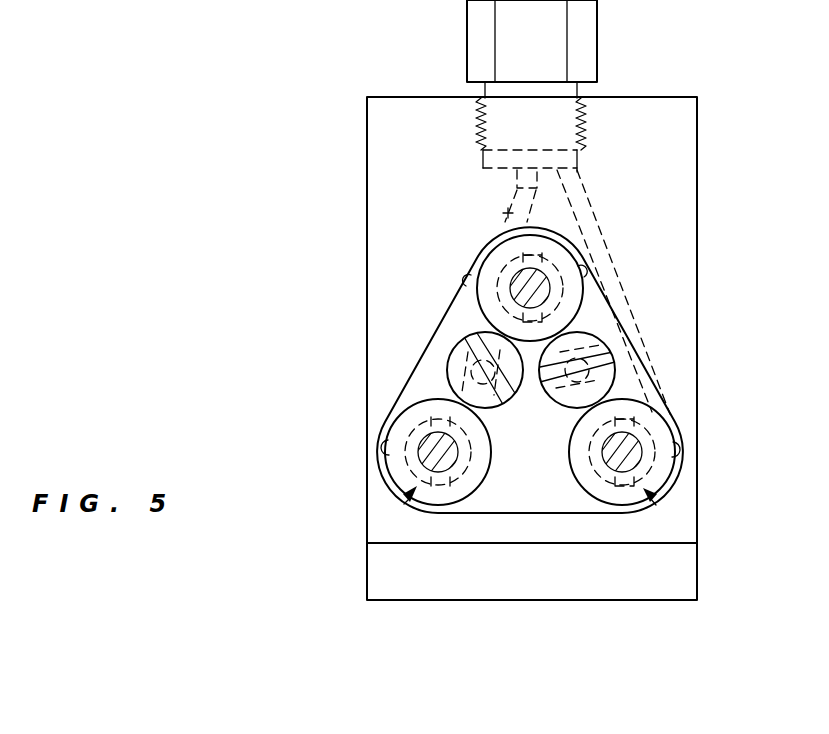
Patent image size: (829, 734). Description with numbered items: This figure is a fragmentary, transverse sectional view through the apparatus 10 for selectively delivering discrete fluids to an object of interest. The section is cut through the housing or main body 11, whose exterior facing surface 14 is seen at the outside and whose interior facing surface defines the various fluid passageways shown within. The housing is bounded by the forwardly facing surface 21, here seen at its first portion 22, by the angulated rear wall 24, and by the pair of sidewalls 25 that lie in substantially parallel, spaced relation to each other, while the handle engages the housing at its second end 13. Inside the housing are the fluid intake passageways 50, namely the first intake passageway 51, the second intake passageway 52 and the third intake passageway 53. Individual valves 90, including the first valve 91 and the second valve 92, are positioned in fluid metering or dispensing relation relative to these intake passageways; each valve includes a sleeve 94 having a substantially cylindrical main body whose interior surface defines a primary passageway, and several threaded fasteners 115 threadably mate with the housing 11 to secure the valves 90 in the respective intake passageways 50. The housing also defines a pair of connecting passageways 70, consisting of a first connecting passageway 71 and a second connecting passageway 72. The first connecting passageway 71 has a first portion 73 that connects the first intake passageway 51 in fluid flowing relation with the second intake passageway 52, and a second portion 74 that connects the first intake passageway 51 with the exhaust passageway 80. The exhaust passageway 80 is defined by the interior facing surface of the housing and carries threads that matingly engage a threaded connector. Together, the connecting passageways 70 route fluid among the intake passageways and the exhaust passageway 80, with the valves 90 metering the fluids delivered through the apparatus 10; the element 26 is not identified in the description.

The apparatus 10 is at (720, 176).
The housing or main body 11 is at (720, 357).
The second end 13 is at (568, 473).
The exterior facing surface 14 is at (697, 238).
The forwardly facing surface 21 is at (660, 99).
The first portion 22 is at (692, 98).
The angulated rear wall 24 is at (558, 580).
The sidewalls 25 is at (368, 272).
The drive roller 26 is at (478, 290).
The fluid intake passageways 50 is at (390, 446).
The first intake passageway 51 is at (582, 252).
The second intake passageway 52 is at (405, 468).
The third intake passageway 53 is at (660, 468).
The connecting passageways 70 is at (594, 208).
The first connecting passageway 71 is at (515, 200).
The second connecting passageway 72 is at (630, 279).
The first portion 73 is at (455, 375).
The second portion 74 is at (505, 216).
The exhaust passageway 80 is at (592, 118).
The valves 90 is at (403, 507).
The first valve 91 is at (478, 253).
The second valve 92 is at (472, 514).
The sleeve 94 is at (653, 425).
The threaded fasteners 115 is at (455, 358).